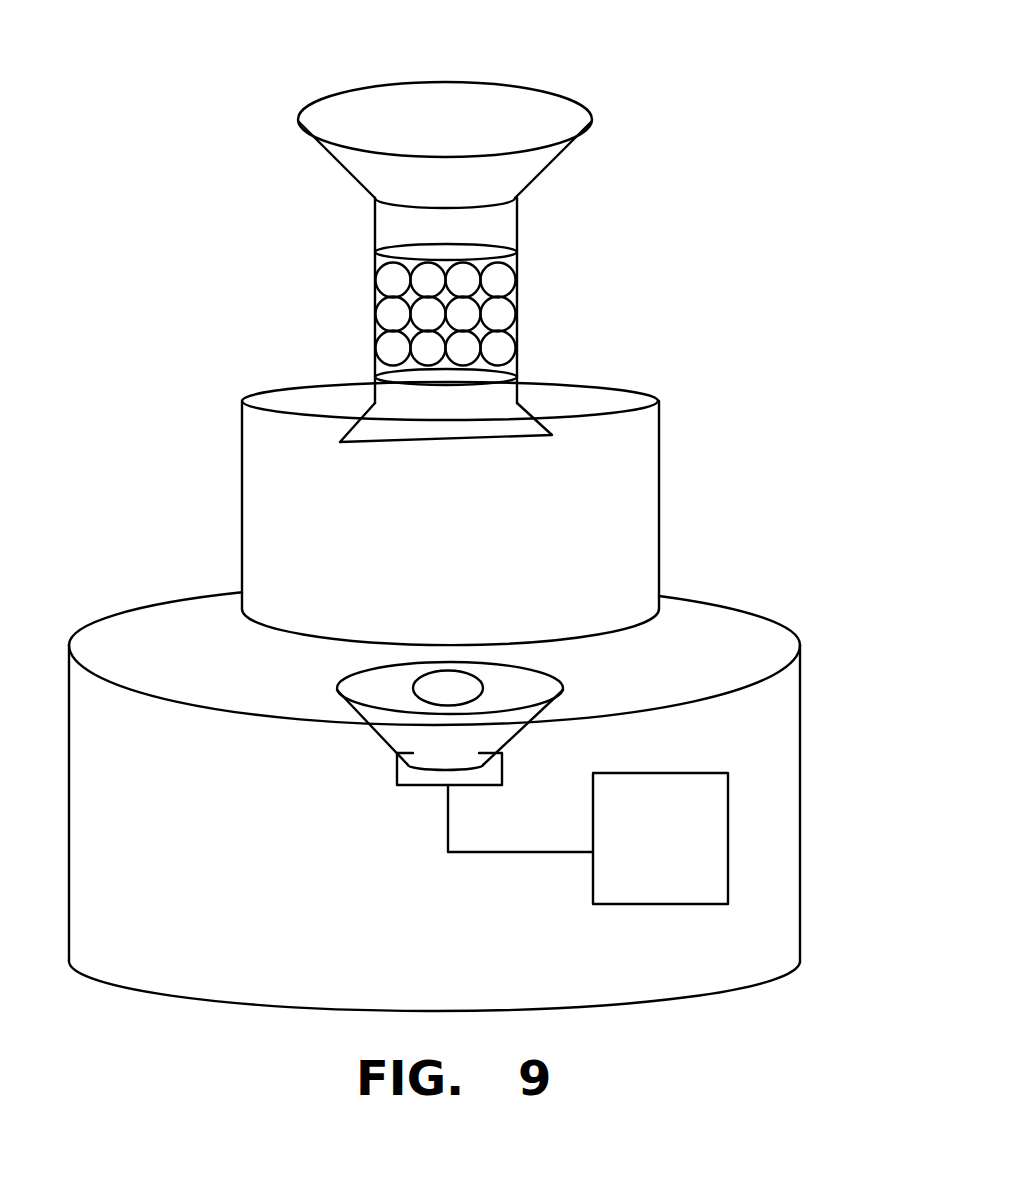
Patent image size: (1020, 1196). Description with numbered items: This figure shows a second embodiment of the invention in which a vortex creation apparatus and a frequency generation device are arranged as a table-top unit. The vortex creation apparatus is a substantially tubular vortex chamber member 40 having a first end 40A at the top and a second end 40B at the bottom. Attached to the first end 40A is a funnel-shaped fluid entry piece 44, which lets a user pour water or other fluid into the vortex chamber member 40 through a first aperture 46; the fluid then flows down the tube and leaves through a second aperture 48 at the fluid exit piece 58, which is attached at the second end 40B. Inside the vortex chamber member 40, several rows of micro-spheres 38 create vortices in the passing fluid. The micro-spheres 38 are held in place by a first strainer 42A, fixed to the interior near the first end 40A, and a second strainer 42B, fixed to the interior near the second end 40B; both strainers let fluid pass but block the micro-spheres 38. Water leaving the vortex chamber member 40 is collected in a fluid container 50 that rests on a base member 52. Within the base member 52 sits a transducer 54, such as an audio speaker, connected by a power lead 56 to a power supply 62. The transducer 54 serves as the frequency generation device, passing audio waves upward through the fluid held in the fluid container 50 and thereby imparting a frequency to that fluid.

The first aperture 46 is at (455, 50).
The fluid entry piece 44 is at (330, 158).
The vortex chamber member 40 is at (373, 332).
The first end 40A is at (517, 216).
The second end 40B is at (517, 396).
The first strainer 42A is at (510, 250).
The second strainer 42B is at (483, 381).
The micro-spheres 38 is at (387, 280).
The fluid exit piece 58 is at (353, 418).
The second aperture 48 is at (450, 452).
The fluid container 50 is at (660, 530).
The base member 52 is at (137, 620).
The transducer 54 is at (367, 719).
The power lead 56 is at (448, 837).
The power supply 62 is at (681, 853).